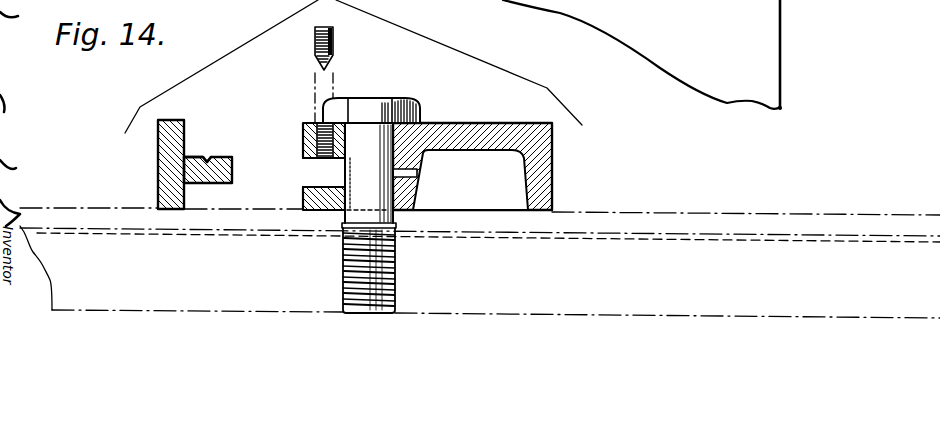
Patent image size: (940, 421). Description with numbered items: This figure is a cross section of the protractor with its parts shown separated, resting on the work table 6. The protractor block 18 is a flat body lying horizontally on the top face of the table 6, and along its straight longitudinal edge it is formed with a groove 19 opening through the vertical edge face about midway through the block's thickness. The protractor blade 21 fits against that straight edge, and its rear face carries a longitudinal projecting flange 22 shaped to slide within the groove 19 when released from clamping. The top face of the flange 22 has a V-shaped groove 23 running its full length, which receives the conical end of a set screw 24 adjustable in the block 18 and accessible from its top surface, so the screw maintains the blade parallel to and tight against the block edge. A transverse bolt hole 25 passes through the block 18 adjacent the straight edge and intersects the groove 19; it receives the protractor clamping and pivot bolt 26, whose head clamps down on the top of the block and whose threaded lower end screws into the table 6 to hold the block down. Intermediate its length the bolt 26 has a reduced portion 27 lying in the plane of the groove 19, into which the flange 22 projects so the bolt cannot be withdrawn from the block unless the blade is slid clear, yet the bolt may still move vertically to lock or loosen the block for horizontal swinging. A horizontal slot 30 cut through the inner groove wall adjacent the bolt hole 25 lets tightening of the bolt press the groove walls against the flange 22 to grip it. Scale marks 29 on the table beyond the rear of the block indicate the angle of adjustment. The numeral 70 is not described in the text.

The work table 6 is at (578, 233).
The protractor block 18 is at (506, 143).
The groove 19 is at (320, 168).
The protractor blade 21 is at (146, 164).
The flange 22 is at (233, 174).
The V-shaped groove 23 is at (206, 162).
The set screw 24 is at (334, 52).
The bolt hole 25 is at (396, 134).
The protractor clamping and pivot bolt 26 is at (393, 269).
The reduced portion 27 is at (472, 154).
The graduations 29 is at (733, 0).
The slot 30 is at (414, 176).
The post 70 is at (733, 0).